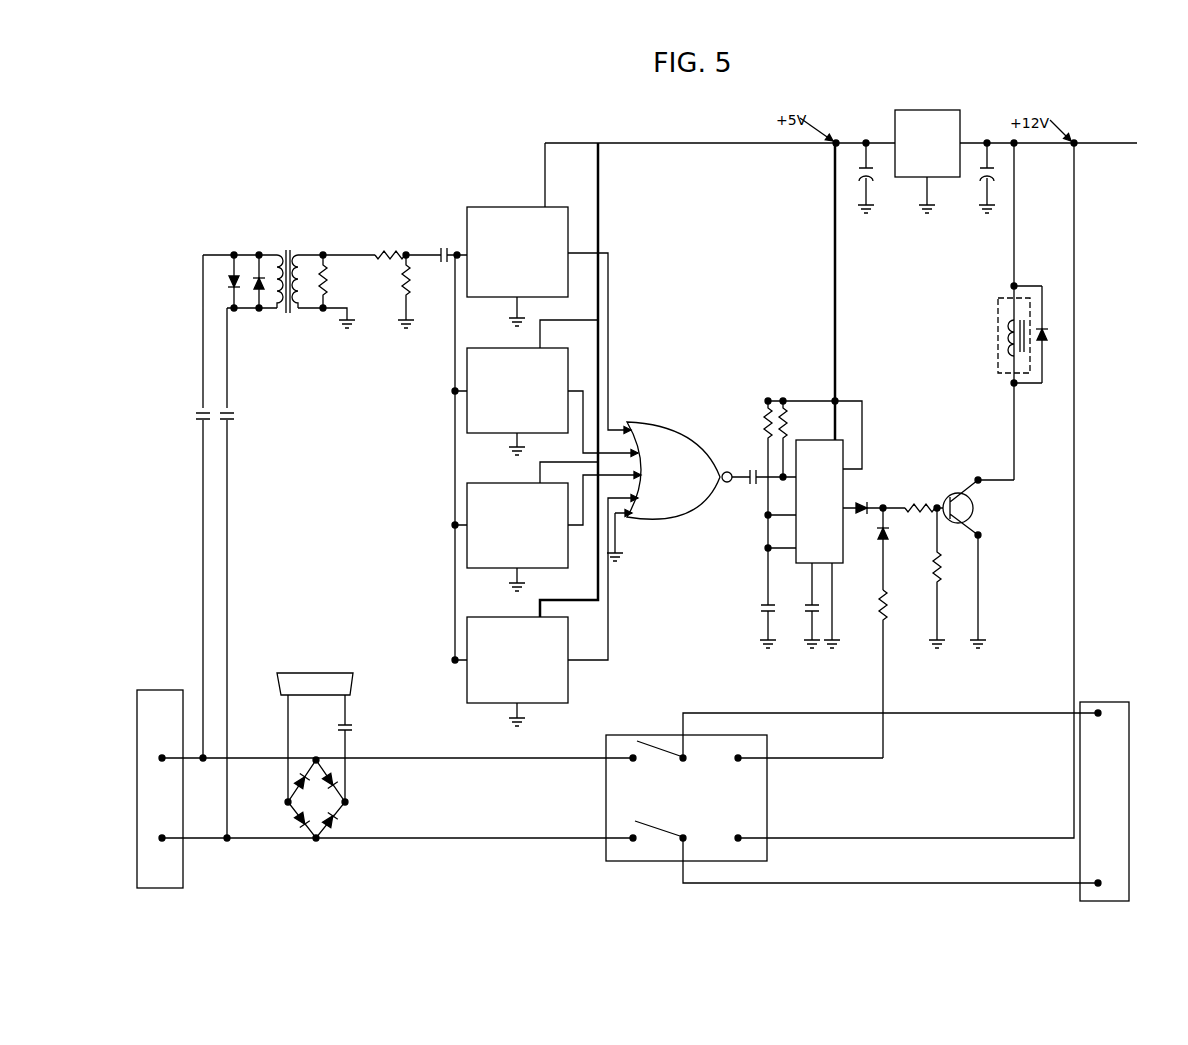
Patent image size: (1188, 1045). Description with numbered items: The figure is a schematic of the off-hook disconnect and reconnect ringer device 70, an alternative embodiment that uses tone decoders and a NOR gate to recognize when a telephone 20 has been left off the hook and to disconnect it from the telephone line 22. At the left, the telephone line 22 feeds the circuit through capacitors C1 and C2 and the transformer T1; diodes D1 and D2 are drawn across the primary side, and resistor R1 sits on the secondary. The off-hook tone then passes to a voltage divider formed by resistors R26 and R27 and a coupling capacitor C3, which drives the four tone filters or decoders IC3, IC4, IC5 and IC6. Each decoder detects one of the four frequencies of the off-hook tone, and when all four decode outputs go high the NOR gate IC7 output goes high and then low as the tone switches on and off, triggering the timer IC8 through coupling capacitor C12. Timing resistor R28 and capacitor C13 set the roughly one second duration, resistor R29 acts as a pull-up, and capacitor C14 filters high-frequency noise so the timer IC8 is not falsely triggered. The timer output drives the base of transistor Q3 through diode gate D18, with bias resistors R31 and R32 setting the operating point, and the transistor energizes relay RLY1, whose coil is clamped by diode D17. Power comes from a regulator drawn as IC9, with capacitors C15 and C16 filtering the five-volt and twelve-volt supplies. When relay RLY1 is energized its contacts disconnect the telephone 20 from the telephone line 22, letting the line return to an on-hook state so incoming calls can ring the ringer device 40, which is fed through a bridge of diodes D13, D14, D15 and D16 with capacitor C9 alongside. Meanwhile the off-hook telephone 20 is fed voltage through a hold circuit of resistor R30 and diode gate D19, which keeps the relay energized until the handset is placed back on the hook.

The off-hook disconnect and reconnect ringer device 70 is at (336, 128).
The telephone line 22 is at (158, 690).
The ringer device 40 is at (318, 669).
The telephone 20 is at (1112, 702).
The diode D1 is at (232, 268).
The diode D2 is at (260, 268).
The transformer T1 is at (289, 250).
The resistor R1 is at (330, 284).
The resistor R26 is at (389, 252).
The resistor R27 is at (408, 284).
The capacitor C3 is at (444, 252).
The capacitor C1 is at (200, 410).
The capacitor C2 is at (229, 410).
The tone decoder IC3 is at (514, 204).
The tone decoder IC4 is at (508, 345).
The tone decoder IC5 is at (508, 480).
The tone decoder IC6 is at (508, 615).
The NOR gate IC7 is at (678, 426).
The timer IC8 is at (820, 438).
The voltage regulator IC9 is at (948, 105).
The capacitor C12 is at (749, 470).
The capacitor C13 is at (762, 603).
The capacitor C14 is at (807, 603).
The capacitor C15 is at (864, 160).
The capacitor C16 is at (988, 160).
The timing resistor R28 is at (762, 418).
The pull-up resistor R29 is at (789, 410).
The resistor R30 is at (889, 610).
The bias resistor R31 is at (918, 503).
The bias resistor R32 is at (932, 572).
The diode gate D18 is at (868, 503).
The diode gate D19 is at (891, 530).
The clamp diode D17 is at (1046, 318).
The transistor Q3 is at (961, 491).
The relay RLY1 is at (657, 732).
The capacitor C9 is at (349, 726).
The diode D13 is at (299, 781).
The diode D14 is at (337, 781).
The diode D15 is at (299, 819).
The diode D16 is at (339, 819).